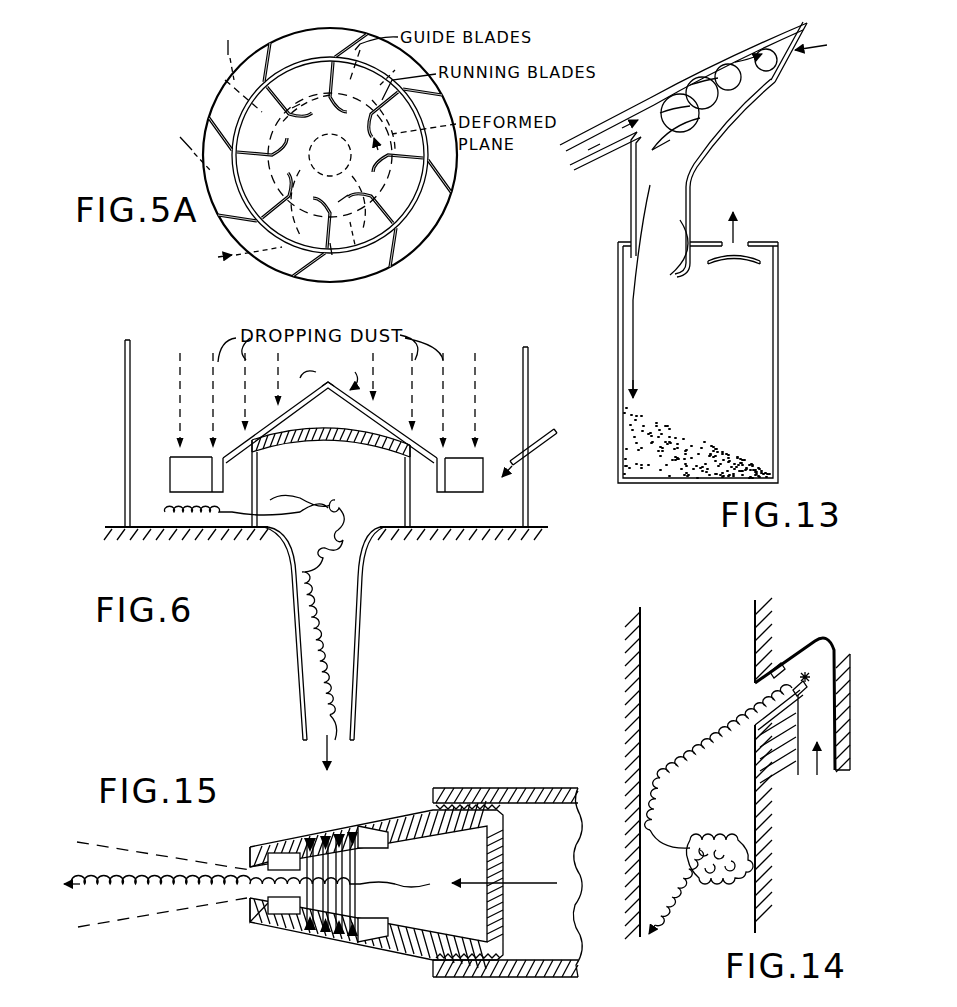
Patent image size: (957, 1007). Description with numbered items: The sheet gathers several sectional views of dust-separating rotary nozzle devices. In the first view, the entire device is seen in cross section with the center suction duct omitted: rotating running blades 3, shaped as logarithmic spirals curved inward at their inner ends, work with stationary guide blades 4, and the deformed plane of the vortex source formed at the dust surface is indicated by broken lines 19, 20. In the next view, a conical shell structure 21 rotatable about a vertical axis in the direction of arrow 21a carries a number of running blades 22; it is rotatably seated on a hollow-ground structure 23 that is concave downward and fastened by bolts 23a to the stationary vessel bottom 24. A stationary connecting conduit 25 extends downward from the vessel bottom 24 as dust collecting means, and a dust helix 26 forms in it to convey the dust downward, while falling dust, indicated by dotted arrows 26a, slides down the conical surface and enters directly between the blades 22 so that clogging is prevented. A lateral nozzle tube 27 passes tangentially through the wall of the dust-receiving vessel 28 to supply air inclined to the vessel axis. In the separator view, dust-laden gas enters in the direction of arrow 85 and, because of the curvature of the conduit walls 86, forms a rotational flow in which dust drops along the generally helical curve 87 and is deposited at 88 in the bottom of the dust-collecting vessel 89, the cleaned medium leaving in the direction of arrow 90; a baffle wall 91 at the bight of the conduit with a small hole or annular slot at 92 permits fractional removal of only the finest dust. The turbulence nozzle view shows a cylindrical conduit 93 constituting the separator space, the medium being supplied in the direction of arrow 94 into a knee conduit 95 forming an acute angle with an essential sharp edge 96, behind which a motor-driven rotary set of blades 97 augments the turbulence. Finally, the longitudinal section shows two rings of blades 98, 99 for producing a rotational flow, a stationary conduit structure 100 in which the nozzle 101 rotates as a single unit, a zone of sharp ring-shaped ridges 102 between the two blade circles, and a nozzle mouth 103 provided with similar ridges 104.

In FIG. 5A, the running blade 3 is at (398, 207).
In FIG. 5A, the guide blade 4 is at (444, 175).
In FIG. 5A, the broken line 19 is at (330, 167).
In FIG. 5A, the broken line 20 is at (350, 280).
In FIG. 6, the conical shell structure 21 is at (384, 421).
In FIG. 6, the arrow 21a is at (342, 398).
In FIG. 6, the running blades 22 is at (173, 465).
In FIG. 6, the hollow-ground structure 23 is at (327, 446).
In FIG. 6, the bolts 23a is at (257, 487).
In FIG. 6, the vessel bottom 24 is at (238, 531).
In FIG. 6, the connecting conduit 25 is at (360, 607).
In FIG. 6, the dust helix 26 is at (300, 592).
In FIG. 6, the dotted arrows 26a is at (410, 382).
In FIG. 6, the lateral nozzle tube 27 is at (538, 430).
In FIG. 6, the dust-receiving vessel 28 is at (125, 368).
In FIG. 13, the arrow 85 is at (558, 163).
In FIG. 13, the conduit walls 86 is at (712, 117).
In FIG. 13, the helical curve 87 is at (636, 341).
In FIG. 13, the deposited dust 88 is at (690, 453).
In FIG. 13, the dust-collecting vessel 89 is at (780, 372).
In FIG. 13, the arrow 90 is at (735, 232).
In FIG. 13, the baffle wall 91 is at (805, 33).
In FIG. 13, the opening 92 is at (786, 66).
In FIG. 14, the cylindrical conduit 93 is at (718, 801).
In FIG. 14, the arrow 94 is at (818, 776).
In FIG. 14, the knee conduit 95 is at (828, 730).
In FIG. 14, the sharp edge 96 is at (818, 675).
In FIG. 14, the rotary set of blades 97 is at (775, 668).
In FIG. 15, the ring of blades 98 is at (383, 953).
In FIG. 15, the ring of blades 99 is at (292, 914).
In FIG. 15, the stationary conduit structure 100 is at (437, 967).
In FIG. 15, the nozzle 101 is at (364, 818).
In FIG. 15, the ring-shaped ridges 102 is at (345, 947).
In FIG. 15, the nozzle mouth 103 is at (250, 892).
In FIG. 15, the ridges 104 is at (253, 864).